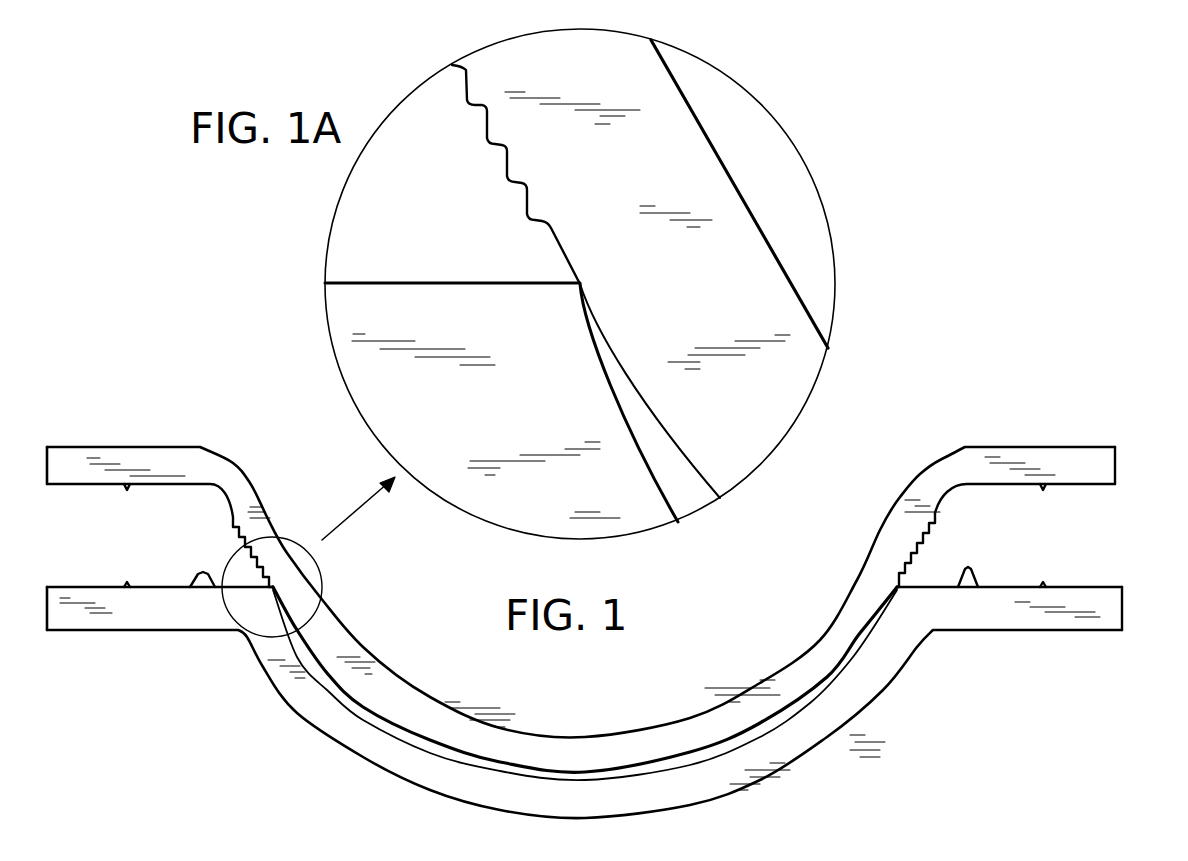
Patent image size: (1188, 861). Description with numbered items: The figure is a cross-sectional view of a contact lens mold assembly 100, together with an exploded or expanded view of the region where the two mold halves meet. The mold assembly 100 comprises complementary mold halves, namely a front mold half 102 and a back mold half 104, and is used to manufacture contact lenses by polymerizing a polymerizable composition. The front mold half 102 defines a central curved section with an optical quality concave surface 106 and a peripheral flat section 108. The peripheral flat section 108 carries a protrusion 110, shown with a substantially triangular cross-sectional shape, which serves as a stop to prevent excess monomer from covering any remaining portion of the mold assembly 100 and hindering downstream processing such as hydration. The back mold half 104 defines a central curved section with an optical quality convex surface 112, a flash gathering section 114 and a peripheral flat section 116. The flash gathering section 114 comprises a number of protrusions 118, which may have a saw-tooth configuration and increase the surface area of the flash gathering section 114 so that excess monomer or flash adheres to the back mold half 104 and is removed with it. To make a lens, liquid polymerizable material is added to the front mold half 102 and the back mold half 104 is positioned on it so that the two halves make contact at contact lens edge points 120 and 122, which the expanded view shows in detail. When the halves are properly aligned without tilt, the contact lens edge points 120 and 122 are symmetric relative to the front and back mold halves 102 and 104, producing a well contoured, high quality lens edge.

In FIG. 1, the mold assembly 100 is at (176, 700).
In FIG. 1A, the front mold half 102 is at (415, 283).
In FIG. 1, the front mold half 102 is at (338, 723).
In FIG. 1A, the back mold half 104 is at (710, 148).
In FIG. 1, the back mold half 104 is at (387, 680).
In FIG. 1, the optical quality concave surface 106 is at (585, 778).
In FIG. 1, the peripheral flat section 108 is at (1043, 586).
In FIG. 1, the protrusion 110 is at (968, 568).
In FIG. 1, the optical quality convex surface 112 is at (597, 771).
In FIG. 1, the flash gathering section 114 is at (934, 516).
In FIG. 1, the peripheral flat section 116 is at (1043, 485).
In FIG. 1A, the protrusions 118 is at (491, 145).
In FIG. 1, the protrusions 118 is at (913, 562).
In FIG. 1A, the contact lens edge point 120 is at (577, 288).
In FIG. 1, the contact lens edge point 120 is at (272, 588).
In FIG. 1A, the contact lens edge point 122 is at (581, 283).
In FIG. 1, the contact lens edge point 122 is at (275, 585).